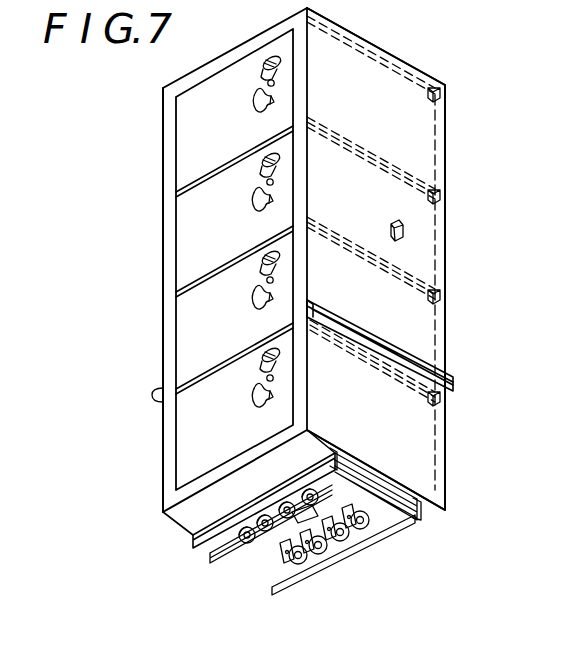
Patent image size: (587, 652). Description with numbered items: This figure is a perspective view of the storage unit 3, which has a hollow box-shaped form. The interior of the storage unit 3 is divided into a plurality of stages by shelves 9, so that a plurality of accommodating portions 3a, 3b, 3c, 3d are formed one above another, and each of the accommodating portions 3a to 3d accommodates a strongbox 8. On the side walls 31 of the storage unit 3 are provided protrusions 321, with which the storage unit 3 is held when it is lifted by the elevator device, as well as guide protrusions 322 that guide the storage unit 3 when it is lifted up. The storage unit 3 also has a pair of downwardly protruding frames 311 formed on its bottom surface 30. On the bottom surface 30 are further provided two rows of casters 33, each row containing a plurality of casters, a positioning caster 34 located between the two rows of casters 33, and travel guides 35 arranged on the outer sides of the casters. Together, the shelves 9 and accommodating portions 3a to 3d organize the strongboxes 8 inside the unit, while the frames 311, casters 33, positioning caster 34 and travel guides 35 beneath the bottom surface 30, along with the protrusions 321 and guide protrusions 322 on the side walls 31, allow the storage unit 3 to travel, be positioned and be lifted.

The storage unit 3 is at (398, 58).
The accommodating portion 3a is at (410, 105).
The accommodating portion 3b is at (397, 210).
The accommodating portion 3c is at (405, 322).
The accommodating portion 3d is at (407, 417).
The strongbox 8 is at (187, 218).
The shelves 9 is at (352, 150).
The bottom surface 30 is at (185, 513).
The side walls 31 is at (428, 148).
The frames 311 is at (377, 477).
The protrusions 321 is at (415, 355).
The guide protrusions 322 is at (403, 231).
The casters 33 is at (366, 530).
The positioning caster 34 is at (290, 527).
The travel guides 35 is at (310, 480).